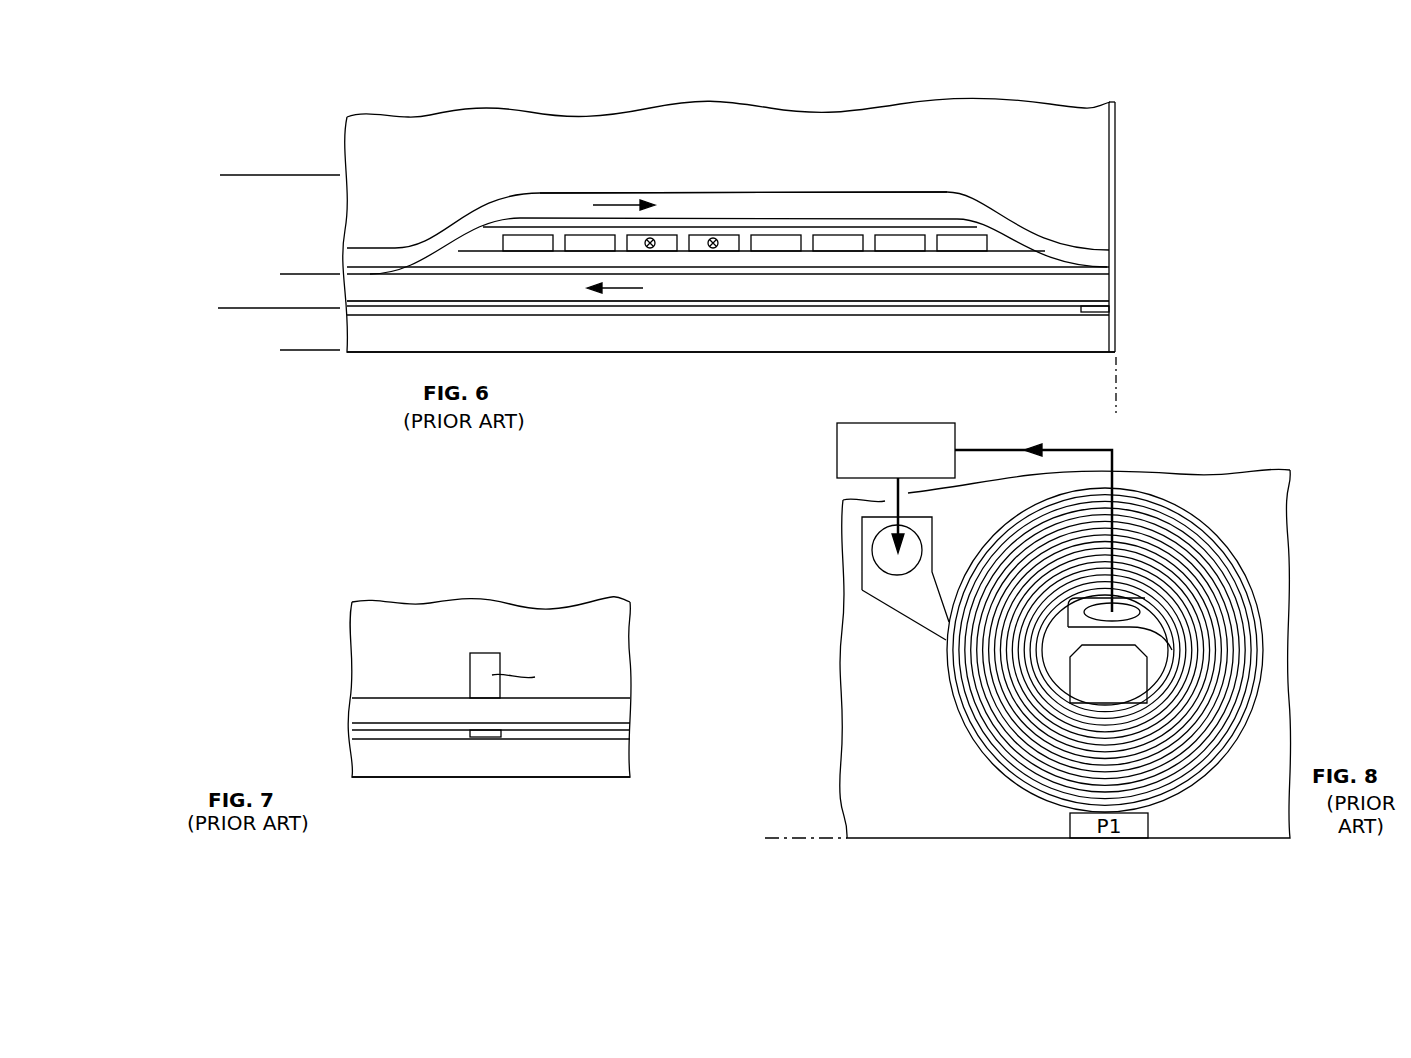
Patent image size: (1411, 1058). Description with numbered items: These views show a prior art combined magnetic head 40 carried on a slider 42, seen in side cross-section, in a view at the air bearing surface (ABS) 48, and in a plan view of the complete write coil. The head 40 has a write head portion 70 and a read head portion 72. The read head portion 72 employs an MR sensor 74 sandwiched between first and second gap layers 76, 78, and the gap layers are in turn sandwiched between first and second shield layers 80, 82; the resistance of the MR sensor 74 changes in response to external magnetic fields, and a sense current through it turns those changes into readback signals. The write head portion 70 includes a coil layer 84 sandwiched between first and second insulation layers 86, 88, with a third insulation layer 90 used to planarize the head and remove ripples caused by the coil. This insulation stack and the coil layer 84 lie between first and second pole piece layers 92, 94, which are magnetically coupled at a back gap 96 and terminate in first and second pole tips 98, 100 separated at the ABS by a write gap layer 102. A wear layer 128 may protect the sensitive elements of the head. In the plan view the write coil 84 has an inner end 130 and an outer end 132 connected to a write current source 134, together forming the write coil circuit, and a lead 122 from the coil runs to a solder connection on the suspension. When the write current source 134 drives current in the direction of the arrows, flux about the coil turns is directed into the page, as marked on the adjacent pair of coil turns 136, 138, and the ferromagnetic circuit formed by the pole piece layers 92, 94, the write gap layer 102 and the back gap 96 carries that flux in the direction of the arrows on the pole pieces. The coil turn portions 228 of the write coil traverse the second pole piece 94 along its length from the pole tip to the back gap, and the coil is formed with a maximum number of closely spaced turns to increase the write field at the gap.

In FIG. 6, the combined magnetic head 40 is at (336, 116).
In FIG. 7, the combined magnetic head 40 is at (654, 616).
In FIG. 6, the slider 42 is at (1093, 128).
In FIG. 7, the slider 42 is at (357, 627).
In FIG. 6, the air bearing surface (ABS) 48 is at (1157, 385).
In FIG. 8, the air bearing surface (ABS) 48 is at (813, 830).
In FIG. 6, the write head portion 70 is at (295, 267).
In FIG. 6, the read head portion 72 is at (295, 359).
In FIG. 6, the MR sensor 74 is at (1110, 308).
In FIG. 7, the MR sensor 74 is at (485, 738).
In FIG. 6, the first gap layer 76 is at (790, 317).
In FIG. 7, the first gap layer 76 is at (403, 740).
In FIG. 6, the second gap layer 78 is at (741, 302).
In FIG. 7, the second gap layer 78 is at (595, 728).
In FIG. 6, the first shield layer 80 is at (865, 338).
In FIG. 7, the first shield layer 80 is at (623, 760).
In FIG. 6, the second shield layer 82 is at (728, 344).
In FIG. 7, the second shield layer 82 is at (429, 711).
In FIG. 6, the coil layer 84 is at (847, 240).
In FIG. 8, the coil layer 84 is at (1228, 605).
In FIG. 6, the first insulation layer 86 is at (658, 262).
In FIG. 6, the second insulation layer 88 is at (1000, 242).
In FIG. 6, the third insulation layer 90 is at (563, 218).
In FIG. 6, the first pole piece layer 92 is at (960, 288).
In FIG. 7, the first pole piece layer 92 is at (353, 713).
In FIG. 6, the second pole piece layer 94 is at (863, 202).
In FIG. 6, the back gap 96 is at (377, 247).
In FIG. 6, the first pole tip 98 is at (1110, 288).
In FIG. 6, the second pole tip 100 is at (1103, 250).
In FIG. 7, the second pole tip 100 is at (488, 658).
In FIG. 6, the write gap layer 102 is at (1109, 268).
In FIG. 7, the write gap layer 102 is at (485, 692).
In FIG. 8, the lead 122 is at (887, 595).
In FIG. 6, the wear layer 128 is at (1115, 168).
In FIG. 8, the inner end 130 is at (1122, 615).
In FIG. 8, the outer end 132 is at (877, 562).
In FIG. 8, the write current source 134 is at (835, 463).
In FIG. 6, the coil turn 136 is at (668, 242).
In FIG. 6, the coil turn 138 is at (728, 242).
In FIG. 8, the coil turn portions 228 is at (1125, 760).